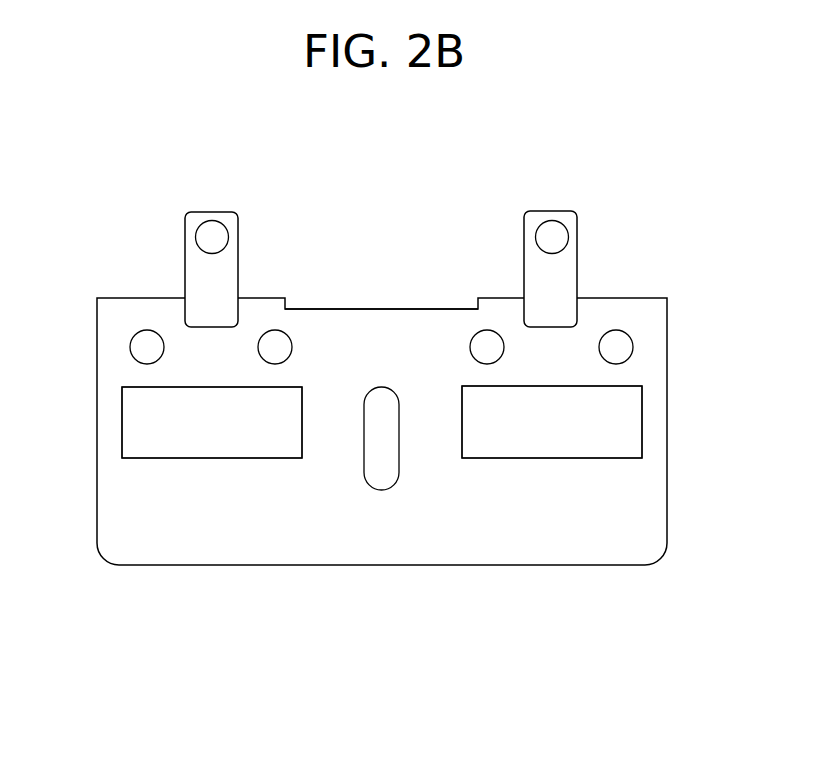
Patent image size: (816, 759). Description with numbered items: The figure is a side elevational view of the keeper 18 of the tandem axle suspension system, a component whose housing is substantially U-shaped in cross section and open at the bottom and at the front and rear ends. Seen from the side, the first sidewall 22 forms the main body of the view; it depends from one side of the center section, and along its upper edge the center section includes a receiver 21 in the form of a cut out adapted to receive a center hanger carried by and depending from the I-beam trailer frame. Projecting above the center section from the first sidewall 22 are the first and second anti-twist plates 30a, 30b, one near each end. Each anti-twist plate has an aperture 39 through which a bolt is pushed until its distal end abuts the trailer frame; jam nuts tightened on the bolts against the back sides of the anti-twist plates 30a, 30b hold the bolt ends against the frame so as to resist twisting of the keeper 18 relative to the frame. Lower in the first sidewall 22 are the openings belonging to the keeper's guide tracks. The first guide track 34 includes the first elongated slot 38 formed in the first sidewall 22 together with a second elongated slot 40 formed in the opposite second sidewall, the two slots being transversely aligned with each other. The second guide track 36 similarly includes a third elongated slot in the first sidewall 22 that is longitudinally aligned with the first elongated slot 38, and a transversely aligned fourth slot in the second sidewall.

The keeper 18 is at (372, 384).
The receiver 21 is at (390, 309).
The first sidewall 22 is at (342, 540).
The first anti-twist plate 30a is at (228, 270).
The second anti-twist plate 30b is at (565, 281).
The aperture 39 is at (205, 228).
The first guide track 34 is at (185, 458).
The first elongated slot 38 is at (212, 422).
The second guide track 36 is at (562, 458).
The second elongated slot 40 is at (552, 422).